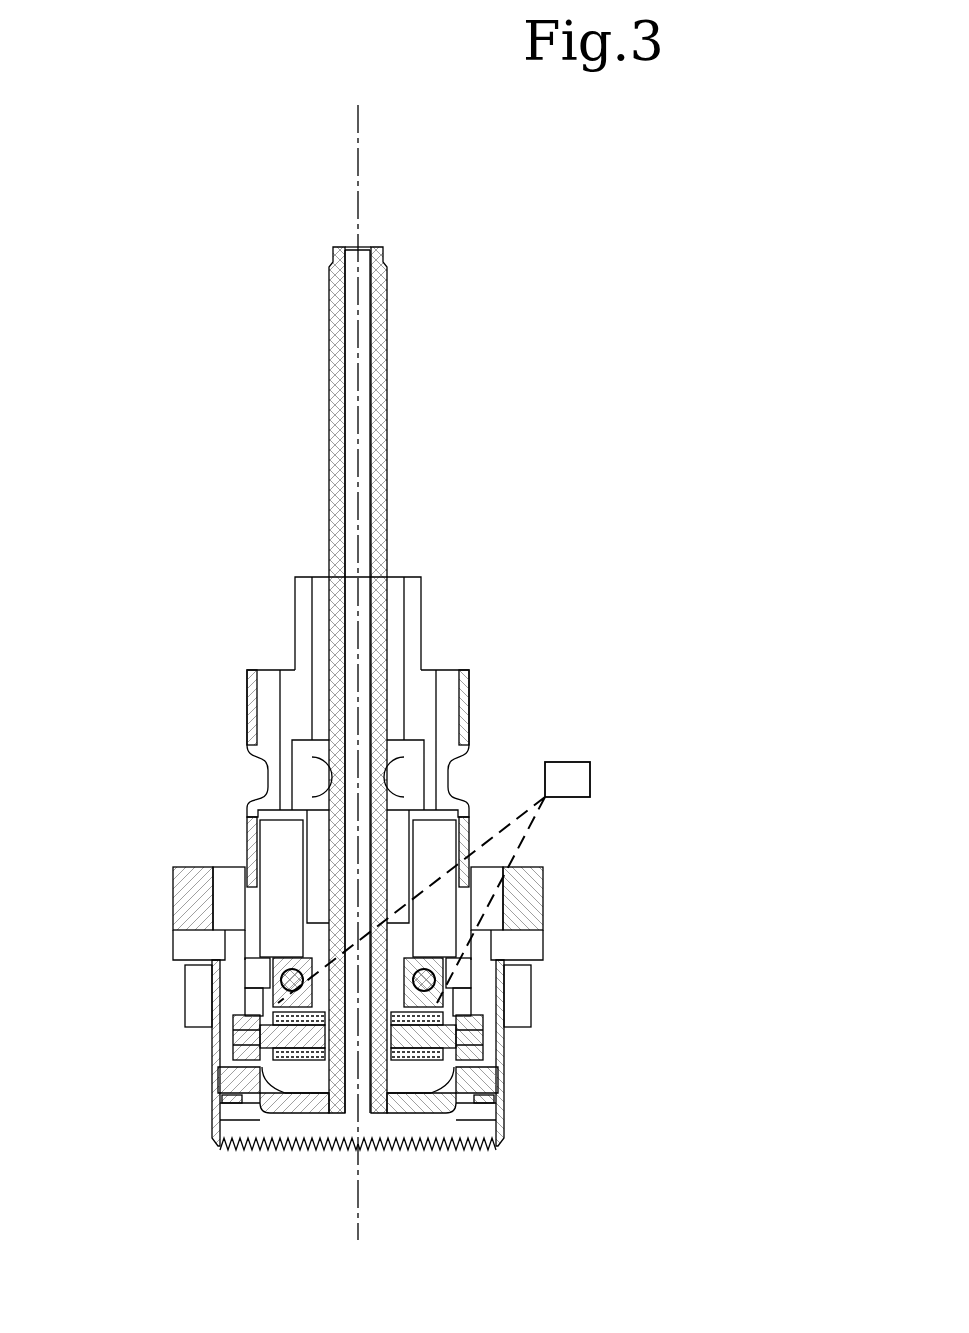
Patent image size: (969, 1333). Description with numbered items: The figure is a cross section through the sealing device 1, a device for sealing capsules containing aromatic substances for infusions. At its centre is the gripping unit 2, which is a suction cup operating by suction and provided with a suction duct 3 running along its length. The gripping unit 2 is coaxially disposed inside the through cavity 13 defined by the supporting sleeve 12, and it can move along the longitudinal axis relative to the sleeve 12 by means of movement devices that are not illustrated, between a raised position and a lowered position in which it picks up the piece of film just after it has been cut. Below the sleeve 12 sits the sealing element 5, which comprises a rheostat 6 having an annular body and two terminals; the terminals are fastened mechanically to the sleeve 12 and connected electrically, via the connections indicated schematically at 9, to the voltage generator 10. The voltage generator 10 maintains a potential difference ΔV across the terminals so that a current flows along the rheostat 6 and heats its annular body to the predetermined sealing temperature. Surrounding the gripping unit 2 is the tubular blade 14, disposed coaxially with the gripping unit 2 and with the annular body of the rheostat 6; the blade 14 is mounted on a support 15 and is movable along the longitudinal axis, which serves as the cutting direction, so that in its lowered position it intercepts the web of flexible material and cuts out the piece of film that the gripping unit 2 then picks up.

The sealing device 1 is at (183, 258).
The gripping unit 2 is at (385, 298).
The suction duct 3 is at (363, 258).
The sealing element 5 is at (210, 1103).
The rheostat 6 is at (242, 1105).
The electrical connections 9 is at (525, 807).
The voltage generator 10 is at (585, 762).
The supporting sleeve 12 is at (246, 677).
The through cavity 13 is at (318, 578).
The blade 14 is at (500, 1123).
The support 15 is at (542, 898).